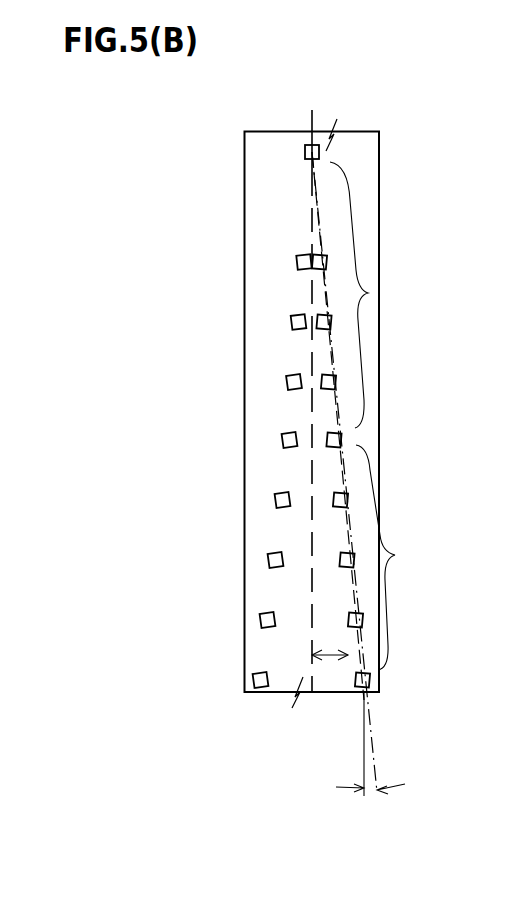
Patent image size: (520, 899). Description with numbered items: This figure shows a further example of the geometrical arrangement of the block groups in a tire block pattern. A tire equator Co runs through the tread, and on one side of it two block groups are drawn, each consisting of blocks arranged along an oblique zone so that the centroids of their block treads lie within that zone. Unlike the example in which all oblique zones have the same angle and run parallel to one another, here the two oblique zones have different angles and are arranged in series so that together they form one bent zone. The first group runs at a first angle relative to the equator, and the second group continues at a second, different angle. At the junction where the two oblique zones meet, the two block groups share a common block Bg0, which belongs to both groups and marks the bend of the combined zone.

The tire equator Co is at (313, 390).
The common block Bg0 is at (348, 437).